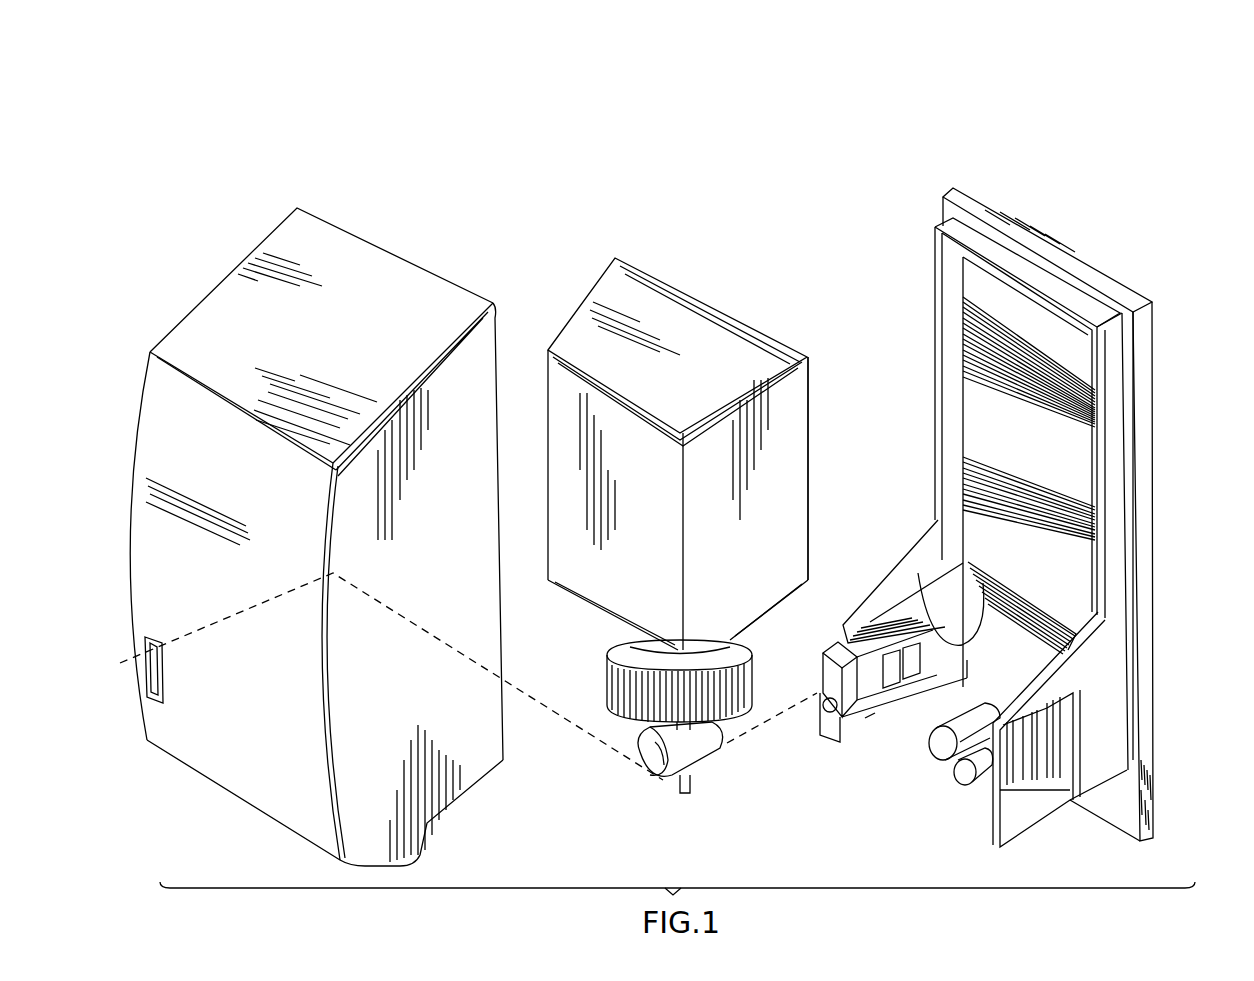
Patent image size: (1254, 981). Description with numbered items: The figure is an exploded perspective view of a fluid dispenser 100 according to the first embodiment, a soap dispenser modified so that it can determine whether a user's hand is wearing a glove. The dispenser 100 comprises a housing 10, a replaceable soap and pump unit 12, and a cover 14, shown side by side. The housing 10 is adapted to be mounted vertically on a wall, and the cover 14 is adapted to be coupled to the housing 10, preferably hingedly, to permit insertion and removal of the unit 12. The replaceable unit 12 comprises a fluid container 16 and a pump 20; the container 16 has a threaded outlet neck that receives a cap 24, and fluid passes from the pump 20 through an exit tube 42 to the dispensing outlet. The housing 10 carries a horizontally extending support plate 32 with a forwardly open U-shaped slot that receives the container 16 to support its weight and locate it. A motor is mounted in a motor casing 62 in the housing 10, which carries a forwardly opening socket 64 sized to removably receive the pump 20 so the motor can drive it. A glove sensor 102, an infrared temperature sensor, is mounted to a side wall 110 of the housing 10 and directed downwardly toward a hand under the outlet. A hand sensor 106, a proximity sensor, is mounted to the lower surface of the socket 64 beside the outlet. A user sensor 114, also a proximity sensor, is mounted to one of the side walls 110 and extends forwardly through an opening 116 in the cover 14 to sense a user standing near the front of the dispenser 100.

The fluid dispenser 100 is at (842, 57).
The housing 10 is at (1170, 352).
The replaceable soap and pump unit 12 is at (667, 255).
The cover 14 is at (190, 308).
The fluid container 16 is at (797, 407).
The pump 20 is at (650, 763).
The cap 24 is at (607, 673).
The support plate 32 is at (930, 603).
The exit tube 42 is at (690, 787).
The motor casing 62 is at (1040, 710).
The socket 64 is at (967, 790).
The glove sensor 102 is at (903, 693).
The hand sensor 106 is at (953, 780).
The side wall 110 is at (870, 730).
The user sensor 114 is at (817, 707).
The opening 116 is at (143, 665).